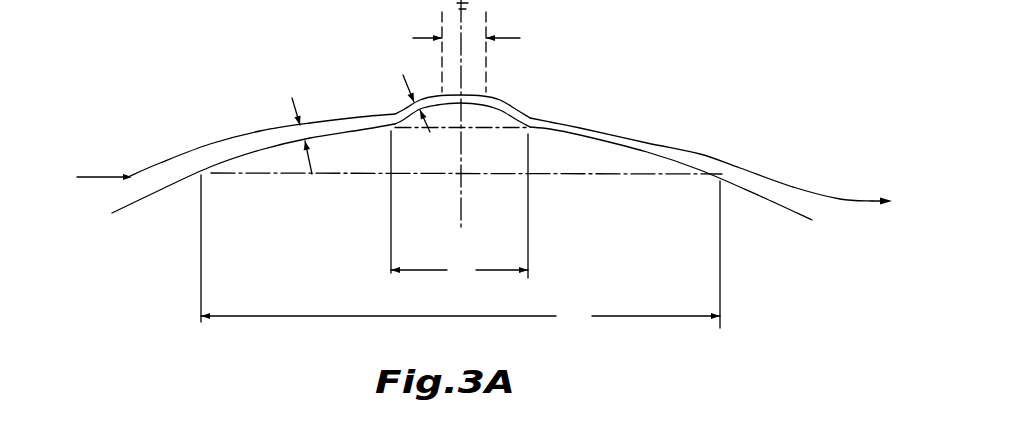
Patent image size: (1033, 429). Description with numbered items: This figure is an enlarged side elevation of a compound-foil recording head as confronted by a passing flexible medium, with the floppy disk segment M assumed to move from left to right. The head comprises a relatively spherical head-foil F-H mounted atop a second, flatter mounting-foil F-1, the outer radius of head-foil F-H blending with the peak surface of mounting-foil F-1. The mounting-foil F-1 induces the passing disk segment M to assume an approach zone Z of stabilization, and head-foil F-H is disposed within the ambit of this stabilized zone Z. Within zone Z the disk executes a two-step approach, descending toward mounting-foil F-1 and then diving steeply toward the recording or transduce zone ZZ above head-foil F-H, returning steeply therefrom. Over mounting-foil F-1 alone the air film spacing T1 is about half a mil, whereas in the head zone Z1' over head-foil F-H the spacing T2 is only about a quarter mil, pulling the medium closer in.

The floppy disk segment M is at (797, 191).
The mounting-foil F-1 is at (620, 153).
The head-foil F-H is at (490, 116).
The transduce zone ZZ is at (508, 37).
The spacing t1 T1 is at (288, 126).
The spacing t2 T2 is at (400, 96).
The head zone Z1' is at (459, 268).
The approach zone Z is at (460, 315).